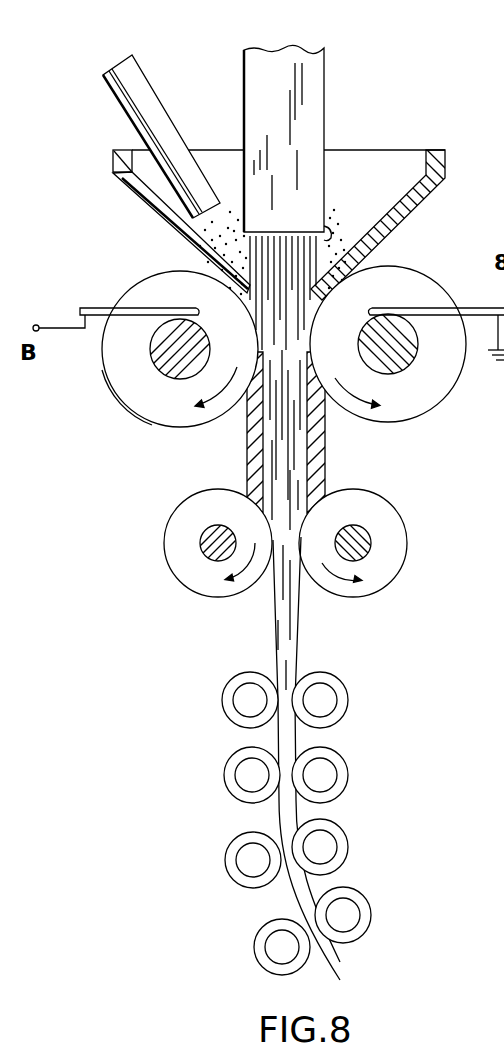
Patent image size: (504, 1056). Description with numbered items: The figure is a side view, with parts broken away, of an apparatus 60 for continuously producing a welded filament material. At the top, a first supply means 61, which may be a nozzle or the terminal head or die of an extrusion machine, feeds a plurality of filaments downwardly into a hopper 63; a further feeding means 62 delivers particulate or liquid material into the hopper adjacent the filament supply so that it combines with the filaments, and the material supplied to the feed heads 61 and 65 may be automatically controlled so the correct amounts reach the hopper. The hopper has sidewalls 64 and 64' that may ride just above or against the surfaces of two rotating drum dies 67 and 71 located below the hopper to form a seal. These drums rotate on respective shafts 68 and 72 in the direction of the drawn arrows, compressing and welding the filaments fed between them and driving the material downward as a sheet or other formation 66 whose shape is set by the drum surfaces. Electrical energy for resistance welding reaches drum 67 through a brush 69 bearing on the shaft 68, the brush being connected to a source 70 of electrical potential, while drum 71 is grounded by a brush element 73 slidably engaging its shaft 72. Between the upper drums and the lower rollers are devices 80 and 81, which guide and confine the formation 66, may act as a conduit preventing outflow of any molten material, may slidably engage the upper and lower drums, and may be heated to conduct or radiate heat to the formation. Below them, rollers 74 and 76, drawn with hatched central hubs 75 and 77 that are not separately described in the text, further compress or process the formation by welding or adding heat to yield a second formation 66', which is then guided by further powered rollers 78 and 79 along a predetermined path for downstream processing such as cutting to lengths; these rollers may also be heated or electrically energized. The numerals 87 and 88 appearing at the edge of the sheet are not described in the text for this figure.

The apparatus 60 is at (383, 73).
The first means for continuously supplying filaments 61 is at (315, 54).
The further feeding means 62 is at (326, 226).
The hopper 63 is at (113, 168).
The sidewall of hopper 64 is at (166, 232).
The sidewall of hopper 64' is at (381, 226).
The feed head 65 is at (125, 115).
The sheet or formation 66 is at (263, 383).
The second formation 66' is at (316, 758).
The rotating drum die 67 is at (143, 412).
The shaft 68 is at (160, 360).
The brush 69 is at (102, 308).
The source of electrical potential 70 is at (36, 325).
The rotating drum die 71 is at (410, 285).
The shaft 72 is at (407, 372).
The brush element 73 is at (435, 310).
The roller or drum 74 is at (182, 510).
The left lower roll shaft 75 is at (207, 550).
The roller or drum 76 is at (380, 500).
The right lower roll shaft 77 is at (408, 536).
The roller 78 is at (228, 698).
The roller 79 is at (350, 684).
The wall or guide device 80 is at (250, 440).
The wall or guide device 81 is at (327, 450).
The adjacent figure element 87 is at (494, 102).
The adjacent figure element 88 is at (490, 214).